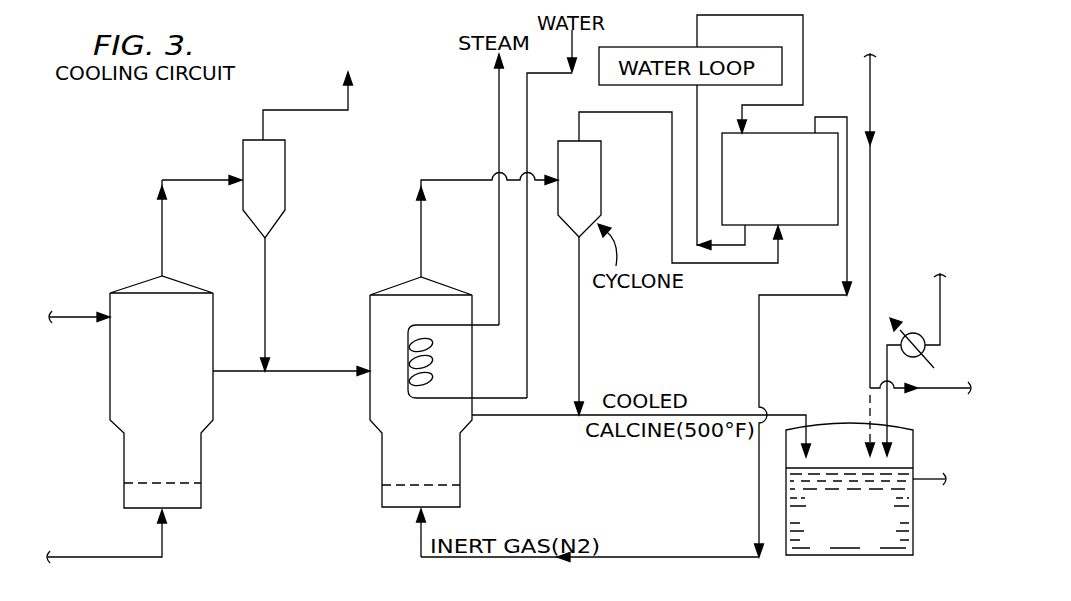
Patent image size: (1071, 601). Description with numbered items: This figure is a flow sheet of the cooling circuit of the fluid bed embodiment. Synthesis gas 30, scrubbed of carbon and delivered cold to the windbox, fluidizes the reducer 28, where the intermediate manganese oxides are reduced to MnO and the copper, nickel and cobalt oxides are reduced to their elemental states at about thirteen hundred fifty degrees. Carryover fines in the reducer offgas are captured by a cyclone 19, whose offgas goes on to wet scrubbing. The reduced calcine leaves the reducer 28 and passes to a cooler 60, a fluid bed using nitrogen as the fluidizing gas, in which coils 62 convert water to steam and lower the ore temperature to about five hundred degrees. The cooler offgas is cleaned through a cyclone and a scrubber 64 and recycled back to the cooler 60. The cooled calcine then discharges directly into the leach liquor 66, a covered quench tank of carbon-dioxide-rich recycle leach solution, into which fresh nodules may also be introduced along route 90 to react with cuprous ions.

The cyclone 19 is at (279, 160).
The reducer 28 is at (177, 277).
The gas 30 is at (115, 557).
The cooler 60 is at (382, 438).
The coils 62 is at (400, 350).
The scrubber 64 is at (792, 175).
The leach liquor 66 is at (843, 454).
The route 90 is at (871, 170).